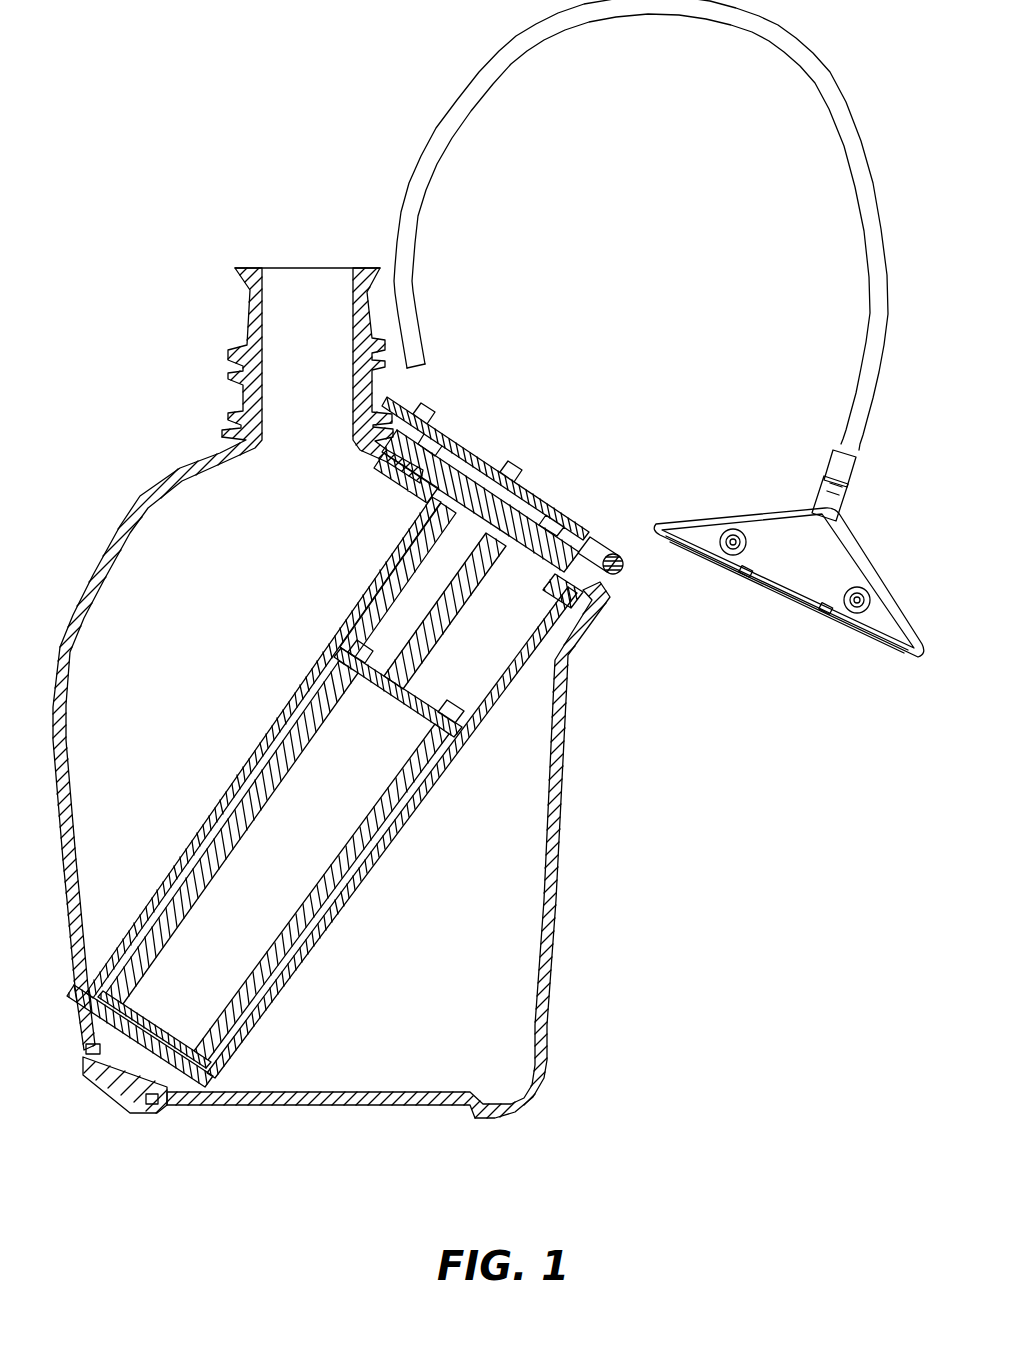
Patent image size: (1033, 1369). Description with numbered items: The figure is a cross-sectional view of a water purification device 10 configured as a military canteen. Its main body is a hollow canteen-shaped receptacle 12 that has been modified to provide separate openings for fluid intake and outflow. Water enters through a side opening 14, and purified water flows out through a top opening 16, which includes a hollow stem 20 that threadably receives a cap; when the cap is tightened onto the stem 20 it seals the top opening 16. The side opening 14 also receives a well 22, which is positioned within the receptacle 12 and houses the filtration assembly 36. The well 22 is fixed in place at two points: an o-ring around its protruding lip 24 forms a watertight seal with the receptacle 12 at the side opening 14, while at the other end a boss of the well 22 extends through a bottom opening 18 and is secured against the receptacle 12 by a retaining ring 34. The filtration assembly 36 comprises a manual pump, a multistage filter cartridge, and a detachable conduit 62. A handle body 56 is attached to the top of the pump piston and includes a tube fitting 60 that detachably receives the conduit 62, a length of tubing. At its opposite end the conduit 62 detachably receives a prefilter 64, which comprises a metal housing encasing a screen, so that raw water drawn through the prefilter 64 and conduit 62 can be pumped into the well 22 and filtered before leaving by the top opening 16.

The water purification device 10 is at (418, 631).
The canteen-shaped receptacle 12 is at (548, 1029).
The side opening 14 is at (592, 605).
The top opening 16 is at (284, 266).
The bottom opening 18 is at (148, 1100).
The hollow stem 20 is at (222, 348).
The well 22 is at (293, 697).
The protruding lip 24 is at (428, 497).
The retaining ring 34 is at (84, 1060).
The filtration assembly 36 is at (383, 827).
The handle body 56 is at (521, 467).
The tube fitting 60 is at (408, 400).
The detachable conduit 62 is at (441, 163).
The detachable prefilter 64 is at (787, 610).